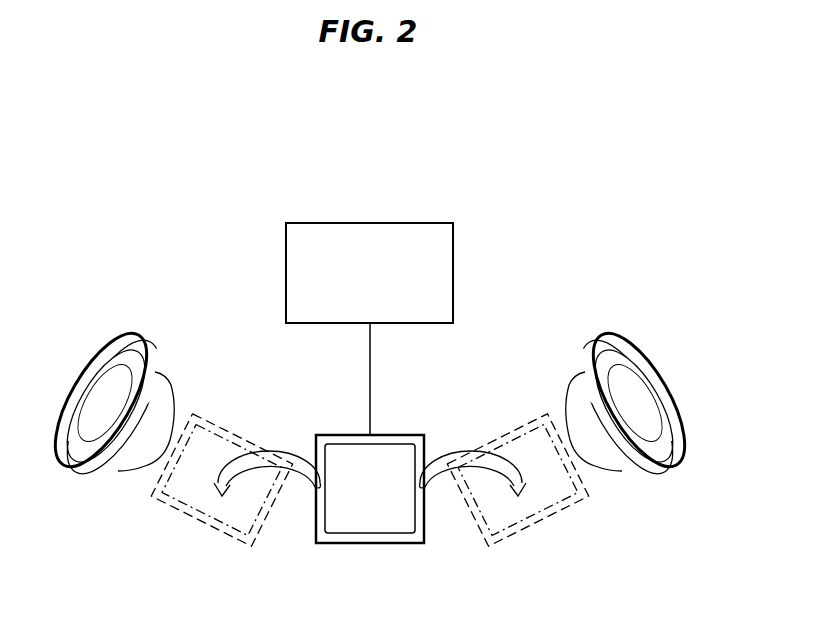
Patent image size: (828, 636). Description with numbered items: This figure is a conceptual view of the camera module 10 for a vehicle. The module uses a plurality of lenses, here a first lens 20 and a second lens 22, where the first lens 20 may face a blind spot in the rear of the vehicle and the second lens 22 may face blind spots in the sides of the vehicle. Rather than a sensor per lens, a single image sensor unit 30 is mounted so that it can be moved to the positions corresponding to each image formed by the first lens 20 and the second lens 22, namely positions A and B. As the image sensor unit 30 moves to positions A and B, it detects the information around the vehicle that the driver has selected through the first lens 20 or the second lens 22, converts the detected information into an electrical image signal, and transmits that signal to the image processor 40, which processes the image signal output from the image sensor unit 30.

The camera module 10 is at (350, 114).
The first lens 20 is at (104, 425).
The second lens 22 is at (637, 427).
The image sensor unit 30 is at (370, 526).
The image processor 40 is at (369, 301).
The position A is at (235, 498).
The position B is at (504, 506).